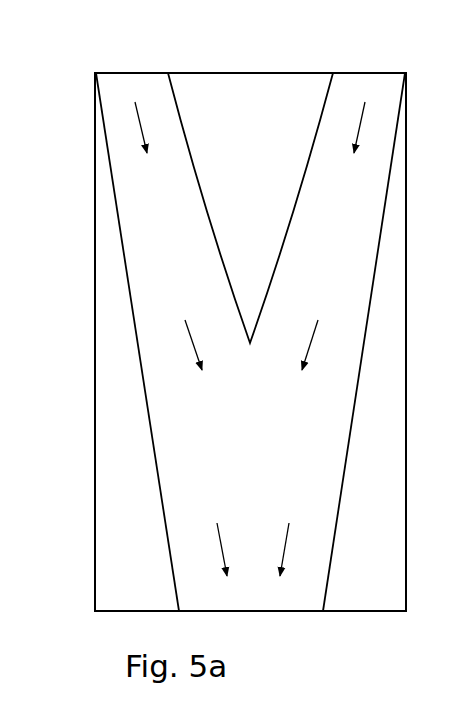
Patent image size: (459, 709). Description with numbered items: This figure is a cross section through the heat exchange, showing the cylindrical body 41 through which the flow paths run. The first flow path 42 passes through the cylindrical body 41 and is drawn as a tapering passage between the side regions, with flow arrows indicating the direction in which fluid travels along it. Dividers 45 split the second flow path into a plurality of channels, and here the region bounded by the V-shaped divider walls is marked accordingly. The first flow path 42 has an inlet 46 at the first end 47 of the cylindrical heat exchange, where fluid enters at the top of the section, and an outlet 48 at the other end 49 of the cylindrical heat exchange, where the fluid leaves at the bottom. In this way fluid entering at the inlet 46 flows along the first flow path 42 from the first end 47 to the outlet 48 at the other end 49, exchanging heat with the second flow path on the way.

The cylindrical body 41 is at (95, 318).
The first flow path 42 is at (183, 224).
The dividers 45 is at (265, 137).
The inlet 46 is at (146, 92).
The first end 47 is at (217, 71).
The outlet 48 is at (250, 612).
The other end 49 is at (355, 612).